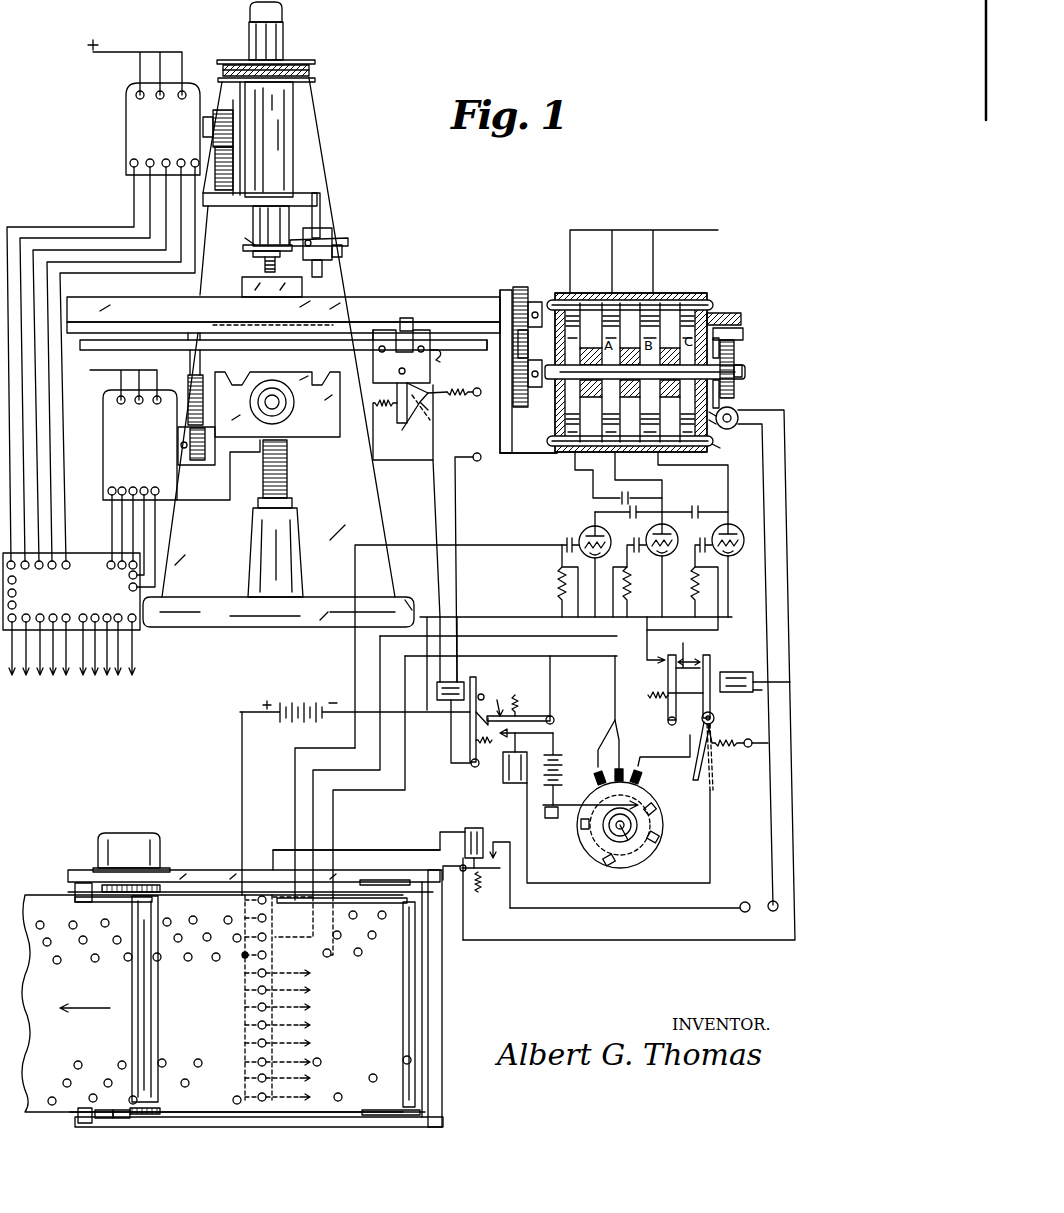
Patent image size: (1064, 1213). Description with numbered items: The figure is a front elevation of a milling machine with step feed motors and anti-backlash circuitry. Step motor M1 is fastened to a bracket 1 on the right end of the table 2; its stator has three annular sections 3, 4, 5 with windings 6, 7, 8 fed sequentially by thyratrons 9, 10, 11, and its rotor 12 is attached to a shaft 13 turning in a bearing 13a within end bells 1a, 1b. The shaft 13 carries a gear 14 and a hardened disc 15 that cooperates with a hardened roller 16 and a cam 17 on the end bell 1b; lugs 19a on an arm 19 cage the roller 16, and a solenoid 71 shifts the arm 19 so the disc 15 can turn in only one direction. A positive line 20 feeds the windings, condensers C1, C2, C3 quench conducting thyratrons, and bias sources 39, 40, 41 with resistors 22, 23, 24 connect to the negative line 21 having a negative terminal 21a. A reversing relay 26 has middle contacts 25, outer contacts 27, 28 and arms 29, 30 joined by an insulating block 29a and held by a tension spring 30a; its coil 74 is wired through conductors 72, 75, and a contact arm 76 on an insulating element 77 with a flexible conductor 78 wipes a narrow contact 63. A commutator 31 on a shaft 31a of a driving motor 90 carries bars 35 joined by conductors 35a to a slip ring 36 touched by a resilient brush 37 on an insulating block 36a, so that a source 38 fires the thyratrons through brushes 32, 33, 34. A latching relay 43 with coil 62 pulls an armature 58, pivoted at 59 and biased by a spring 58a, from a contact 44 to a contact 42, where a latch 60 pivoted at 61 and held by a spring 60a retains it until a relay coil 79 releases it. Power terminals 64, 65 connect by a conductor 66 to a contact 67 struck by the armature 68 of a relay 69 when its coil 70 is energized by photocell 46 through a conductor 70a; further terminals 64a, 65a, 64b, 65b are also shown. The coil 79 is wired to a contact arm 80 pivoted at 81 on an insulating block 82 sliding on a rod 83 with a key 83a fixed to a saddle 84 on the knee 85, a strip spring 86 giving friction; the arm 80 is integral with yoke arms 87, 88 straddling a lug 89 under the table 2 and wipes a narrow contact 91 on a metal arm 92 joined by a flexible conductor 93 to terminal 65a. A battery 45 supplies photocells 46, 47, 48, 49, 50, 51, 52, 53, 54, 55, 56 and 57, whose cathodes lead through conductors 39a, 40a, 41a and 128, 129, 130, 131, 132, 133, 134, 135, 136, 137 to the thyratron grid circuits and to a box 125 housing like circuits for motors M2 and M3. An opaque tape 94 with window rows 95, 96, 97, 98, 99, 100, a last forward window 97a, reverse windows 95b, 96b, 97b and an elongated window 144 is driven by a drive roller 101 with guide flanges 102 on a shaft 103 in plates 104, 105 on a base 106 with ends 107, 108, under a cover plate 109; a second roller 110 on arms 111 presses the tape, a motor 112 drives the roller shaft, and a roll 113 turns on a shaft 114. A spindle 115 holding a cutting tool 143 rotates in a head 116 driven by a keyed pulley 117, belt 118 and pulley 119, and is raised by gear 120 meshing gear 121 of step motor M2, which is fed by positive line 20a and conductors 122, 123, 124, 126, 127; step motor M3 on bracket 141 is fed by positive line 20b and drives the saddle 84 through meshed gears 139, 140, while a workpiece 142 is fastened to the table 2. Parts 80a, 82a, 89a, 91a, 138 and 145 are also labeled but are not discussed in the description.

The bracket 1 is at (500, 415).
The end bell 1a is at (552, 300).
The end bell 1b is at (706, 450).
The table 2 is at (457, 295).
The stator section 3 is at (585, 292).
The stator section 4 is at (627, 292).
The stator section 5 is at (668, 292).
The winding 6 is at (576, 414).
The winding 7 is at (618, 415).
The winding 8 is at (658, 415).
The thyratron 9 is at (586, 531).
The thyratron 10 is at (646, 530).
The thyratron 11 is at (737, 536).
The rotor 12 is at (557, 442).
The shaft 13 is at (560, 367).
The bearing 13a is at (540, 387).
The gear 14 is at (520, 408).
The hardened disc 15 is at (737, 355).
The hardened roller 16 is at (743, 333).
The hardened cam 17 is at (735, 313).
The arm 19 is at (720, 395).
The lug 19a is at (720, 340).
The positive line 20 is at (685, 228).
The positive line 20a is at (108, 55).
The positive line 20b is at (105, 372).
The negative line 21 is at (503, 618).
The negative terminal 21a is at (17, 606).
The resistor 22 is at (558, 585).
The resistor 23 is at (630, 596).
The resistor 24 is at (692, 580).
The middle contacts 25 is at (689, 670).
The reversing relay 26 is at (712, 708).
The outer contact 27 is at (682, 636).
The outer contact 28 is at (690, 652).
The relay arm 29 is at (713, 662).
The insulating block 29a is at (685, 694).
The relay arm 30 is at (668, 678).
The tension spring 30a is at (652, 699).
The commutator 31 is at (577, 849).
The shaft 31a is at (633, 842).
The brush 32 is at (596, 778).
The brush 33 is at (623, 768).
The brush 34 is at (643, 775).
The commutator bars 35 is at (580, 825).
The conductors 35a is at (645, 855).
The slip ring 36 is at (658, 815).
The insulating block 36a is at (548, 818).
The resilient brush 37 is at (590, 798).
The current source 38 is at (562, 757).
The bias source 39 is at (563, 543).
The conductor 39a is at (305, 748).
The bias source 40 is at (636, 553).
The conductor 40a is at (318, 770).
The bias source 41 is at (708, 535).
The conductor 41a is at (338, 790).
The contact 42 is at (526, 727).
The latching relay 43 is at (482, 690).
The contact 44 is at (492, 699).
The battery 45 is at (286, 702).
The photocell 46 is at (244, 898).
The photocell 47 is at (245, 915).
The photocell 48 is at (276, 930).
The photocell 49 is at (276, 948).
The photocell 50 is at (277, 968).
The photocell 51 is at (277, 985).
The photocell 52 is at (277, 1003).
The photocell 53 is at (277, 1020).
The photocell 54 is at (277, 1039).
The photocell 55 is at (277, 1057).
The photocell 56 is at (277, 1074).
The photocell 57 is at (277, 1092).
The relay armature 58 is at (532, 716).
The relay spring 58a is at (517, 693).
The pivot 59 is at (554, 718).
The latch 60 is at (472, 717).
The spring 60a is at (489, 747).
The pivot 61 is at (462, 763).
The relay coil 62 is at (503, 775).
The narrow contact 63 is at (711, 790).
The power terminal 64 is at (743, 912).
The power terminal 64a is at (474, 452).
The terminal 64b is at (16, 593).
The power terminal 65 is at (770, 915).
The terminal 65a is at (485, 381).
The terminal 65b is at (23, 580).
The conductor 66 is at (616, 910).
The contact 67 is at (502, 874).
The armature 68 is at (481, 880).
The relay 69 is at (458, 866).
The relay coil 70 is at (474, 828).
The conductor 70a is at (352, 848).
The solenoid 71 is at (729, 429).
The conductor 72 is at (785, 545).
The relay coil 74 is at (745, 693).
The conductor 75 is at (767, 622).
The contact arm 76 is at (695, 781).
The insulating element 77 is at (712, 735).
The flexible conductor 78 is at (735, 747).
The relay coil 79 is at (464, 682).
The contact arm 80 is at (399, 424).
The lever 80a is at (345, 240).
The pivot 81 is at (398, 371).
The insulating block 82 is at (372, 388).
The post 82a is at (322, 265).
The rod 83 is at (487, 349).
The key 83a is at (322, 218).
The saddle 84 is at (240, 378).
The knee 85 is at (277, 404).
The strip spring 86 is at (442, 354).
The yoke arm 87 is at (383, 330).
The yoke arm 88 is at (425, 333).
The lug 89 is at (410, 314).
The tab 89a is at (248, 244).
The driving motor 90 is at (603, 853).
The narrow contact 91 is at (410, 424).
The lever 91a is at (343, 250).
The metal arm 92 is at (430, 403).
The flexible conductor 93 is at (460, 382).
The tape 94 is at (48, 893).
The window row 95 is at (41, 921).
The window 95b is at (360, 920).
The window row 96 is at (51, 944).
The window 96b is at (360, 942).
The window row 97 is at (136, 982).
The window 97a is at (243, 958).
The window 97b is at (329, 957).
The window row 98 is at (78, 1061).
The window row 99 is at (65, 1079).
The window row 100 is at (50, 1097).
The drive roller 101 is at (100, 1120).
The guide flanges 102 is at (160, 892).
The shaft 103 is at (122, 1120).
The plate 104 is at (222, 1128).
The plate 105 is at (180, 870).
The base 106 is at (430, 1005).
The end 107 is at (77, 1118).
The end 108 is at (416, 976).
The cover plate 109 is at (275, 1114).
The second roller 110 is at (132, 982).
The arms 111 is at (120, 902).
The motor 112 is at (135, 833).
The roll 113 is at (380, 1108).
The shaft 114 is at (383, 880).
The spindle 115 is at (283, 222).
The head 116 is at (294, 155).
The keyed pulley 117 is at (288, 64).
The belt 118 is at (316, 80).
The motor driven pulley 119 is at (316, 62).
The gear 120 is at (260, 203).
The gear 121 is at (207, 118).
The conductor 122 is at (37, 226).
The conductor 123 is at (62, 236).
The conductor 124 is at (80, 248).
The box 125 is at (85, 552).
The conductor 126 is at (102, 263).
The conductor 127 is at (148, 272).
The conductor 128 is at (12, 680).
The conductor 129 is at (28, 680).
The conductor 130 is at (41, 680).
The conductor 131 is at (54, 680).
The conductor 132 is at (67, 680).
The conductor 133 is at (84, 680).
The conductor 134 is at (96, 680).
The conductor 135 is at (108, 680).
The conductor 136 is at (119, 680).
The conductor 137 is at (133, 660).
The lead screw 138 is at (288, 466).
The gear 139 is at (196, 460).
The gear 140 is at (190, 372).
The bracket 141 is at (203, 500).
The workpiece 142 is at (242, 287).
The cutting tool 143 is at (262, 263).
The elongated window 144 is at (348, 903).
The post 145 is at (320, 196).
The step motor M1 is at (708, 290).
The step motor M2 is at (126, 115).
The step motor M3 is at (140, 488).
The condenser C1 is at (628, 507).
The condenser C2 is at (695, 506).
The condenser C3 is at (620, 495).